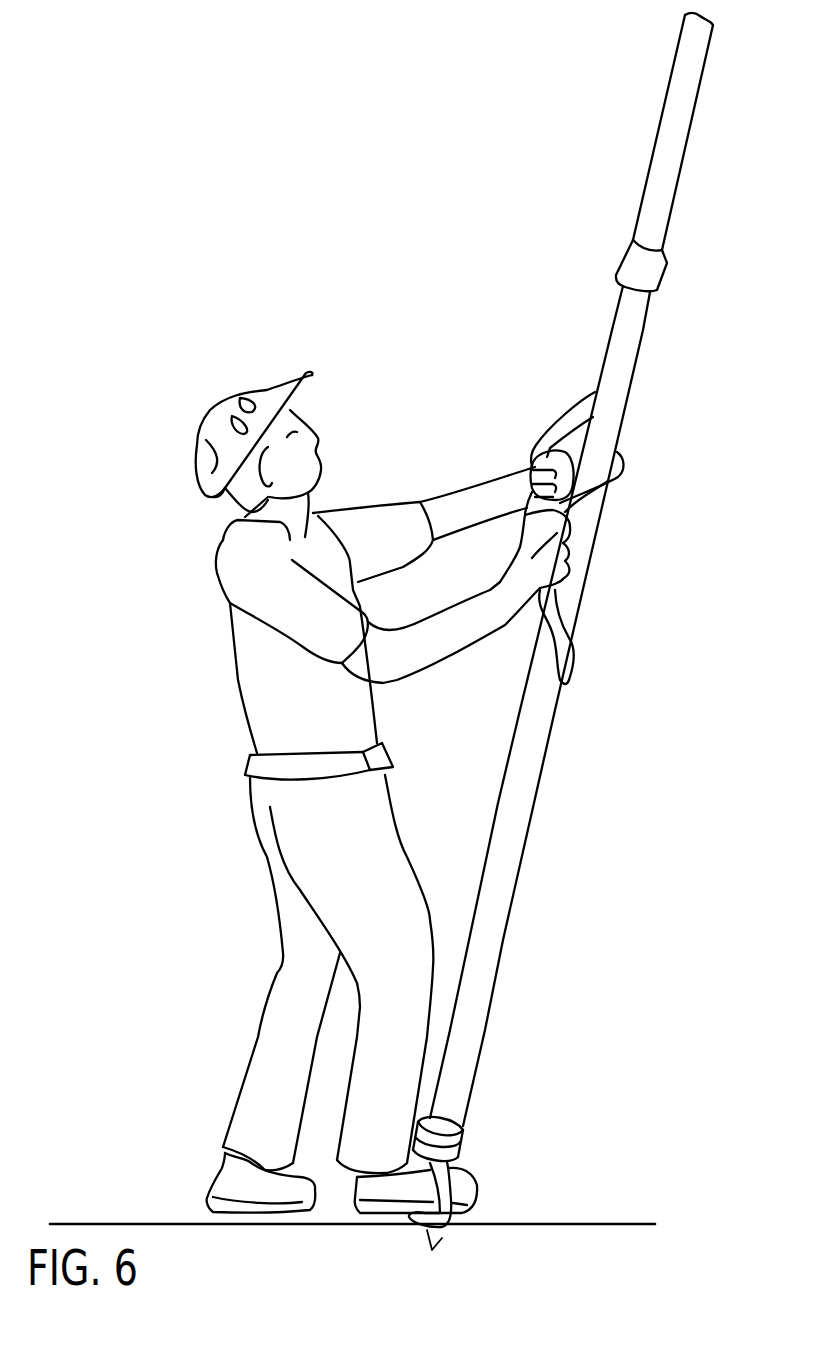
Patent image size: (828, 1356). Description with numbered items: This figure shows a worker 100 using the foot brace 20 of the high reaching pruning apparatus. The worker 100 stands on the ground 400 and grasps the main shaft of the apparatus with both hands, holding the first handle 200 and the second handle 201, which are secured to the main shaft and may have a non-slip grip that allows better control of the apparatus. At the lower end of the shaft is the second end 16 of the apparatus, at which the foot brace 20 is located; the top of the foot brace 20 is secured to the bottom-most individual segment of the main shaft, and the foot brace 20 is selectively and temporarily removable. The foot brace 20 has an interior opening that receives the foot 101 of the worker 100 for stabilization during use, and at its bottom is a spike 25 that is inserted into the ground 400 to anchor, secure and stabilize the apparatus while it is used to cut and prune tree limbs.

The worker 100 is at (363, 821).
The foot 101 is at (367, 1183).
The first handle 200 is at (563, 422).
The second handle 201 is at (585, 493).
The second end 16 is at (450, 1147).
The foot brace 20 is at (443, 1187).
The spike 25 is at (447, 1248).
The ground 400 is at (577, 1224).